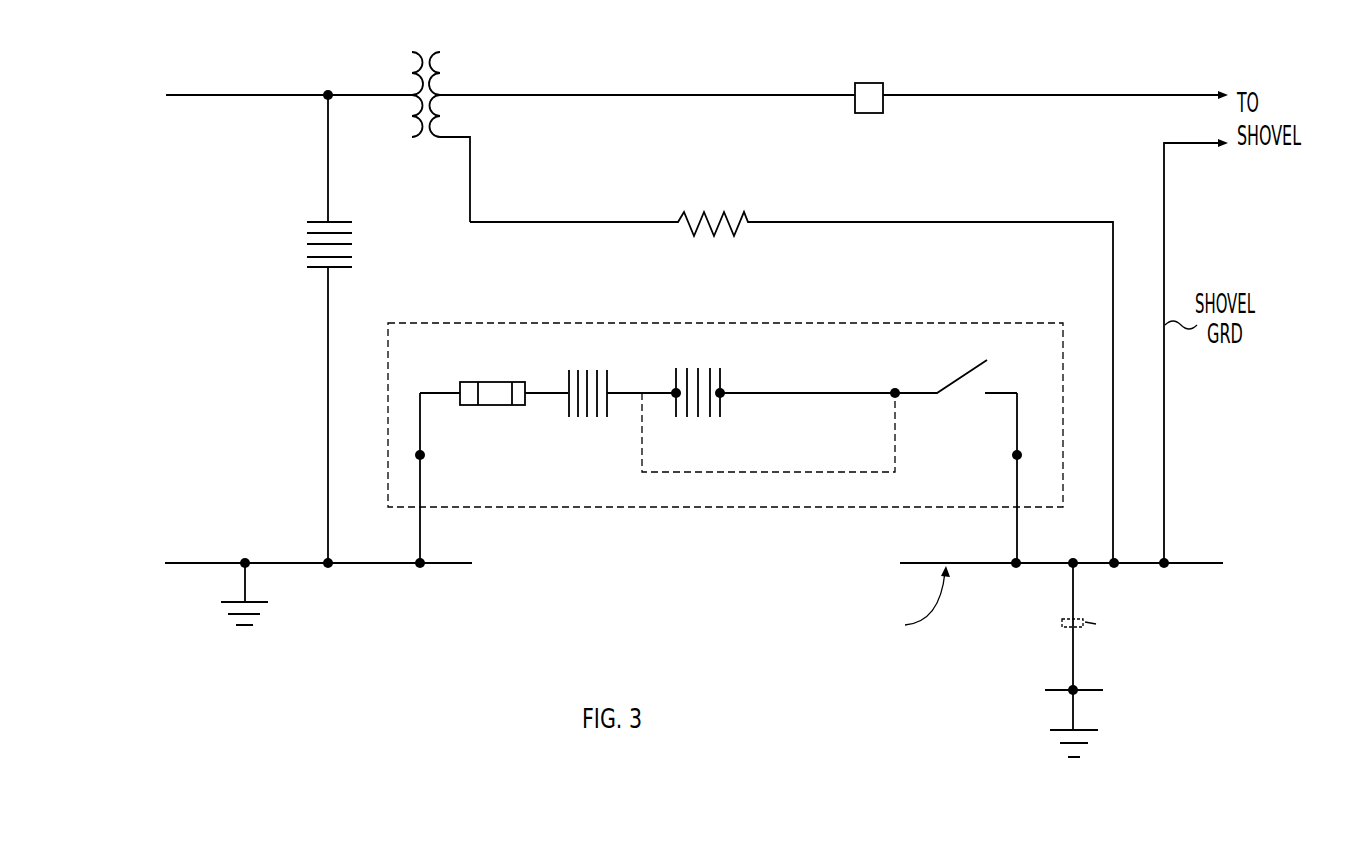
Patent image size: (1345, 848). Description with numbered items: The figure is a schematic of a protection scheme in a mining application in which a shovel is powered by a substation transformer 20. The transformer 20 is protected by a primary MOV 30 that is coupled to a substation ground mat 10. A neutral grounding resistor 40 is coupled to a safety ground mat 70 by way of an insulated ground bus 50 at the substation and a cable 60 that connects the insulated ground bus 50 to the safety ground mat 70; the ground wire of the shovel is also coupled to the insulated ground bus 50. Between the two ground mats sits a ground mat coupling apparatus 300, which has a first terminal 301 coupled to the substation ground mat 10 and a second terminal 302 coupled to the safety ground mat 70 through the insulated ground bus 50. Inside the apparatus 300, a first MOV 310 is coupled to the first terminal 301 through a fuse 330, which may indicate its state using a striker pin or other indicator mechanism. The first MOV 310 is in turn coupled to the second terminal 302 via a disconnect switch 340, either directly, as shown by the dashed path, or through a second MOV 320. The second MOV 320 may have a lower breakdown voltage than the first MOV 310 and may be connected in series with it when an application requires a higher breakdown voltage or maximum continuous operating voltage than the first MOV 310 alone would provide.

The substation transformer 20 is at (427, 50).
The primary MOV 30 is at (307, 240).
The neutral grounding resistor 40 is at (741, 207).
The ground mat coupling apparatus 300 is at (683, 323).
The fuse 330 is at (497, 405).
The first MOV 310 is at (585, 428).
The first terminal 301 is at (427, 463).
The second MOV 320 is at (701, 430).
The disconnect switch 340 is at (964, 399).
The second terminal 302 is at (1008, 464).
The substation ground mat 10 is at (350, 566).
The insulated ground bus 50 is at (1197, 560).
The cable 60 is at (1070, 647).
The safety ground mat 70 is at (1055, 695).